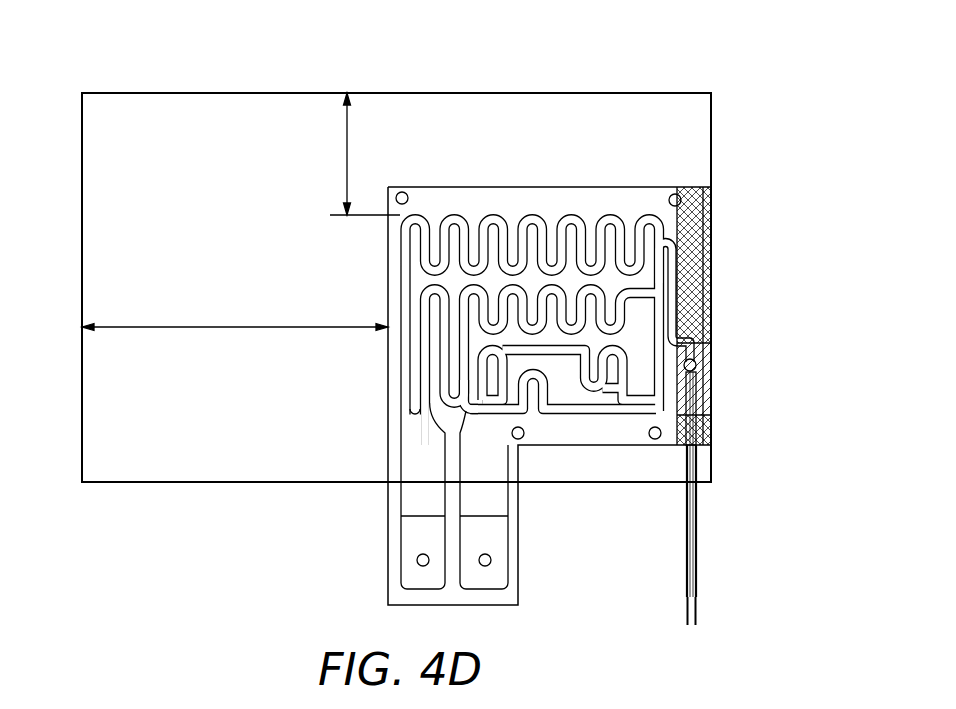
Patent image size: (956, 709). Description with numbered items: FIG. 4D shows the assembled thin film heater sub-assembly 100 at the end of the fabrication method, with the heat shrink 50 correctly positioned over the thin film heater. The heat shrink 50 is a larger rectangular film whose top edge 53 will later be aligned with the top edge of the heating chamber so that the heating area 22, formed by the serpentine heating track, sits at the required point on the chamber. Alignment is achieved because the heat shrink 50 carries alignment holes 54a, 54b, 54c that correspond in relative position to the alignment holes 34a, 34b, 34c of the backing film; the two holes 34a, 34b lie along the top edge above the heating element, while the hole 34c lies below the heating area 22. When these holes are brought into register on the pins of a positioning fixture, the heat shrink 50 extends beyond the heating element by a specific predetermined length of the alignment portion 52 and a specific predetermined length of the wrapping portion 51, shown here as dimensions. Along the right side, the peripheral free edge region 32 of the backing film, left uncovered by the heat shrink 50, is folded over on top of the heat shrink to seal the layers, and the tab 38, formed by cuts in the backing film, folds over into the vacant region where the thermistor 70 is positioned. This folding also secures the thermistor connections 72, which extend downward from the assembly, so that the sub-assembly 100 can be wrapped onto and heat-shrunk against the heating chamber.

The heating area 22 is at (633, 267).
The free edge region 32 is at (703, 208).
The alignment hole 34a is at (418, 172).
The alignment hole 34b is at (661, 173).
The alignment hole 34c is at (586, 477).
The tab 38 is at (703, 383).
The heat shrink film 50 is at (93, 150).
The wrapping portion 51 is at (235, 316).
The alignment portion 52 is at (356, 154).
The top edge 53 is at (637, 92).
The alignment hole 54a is at (403, 192).
The alignment hole 54b is at (675, 193).
The alignment hole 54c is at (518, 437).
The thermistor 70 is at (705, 519).
The thermistor connections 72 is at (697, 576).
The thin film heater sub-assembly 100 is at (170, 555).